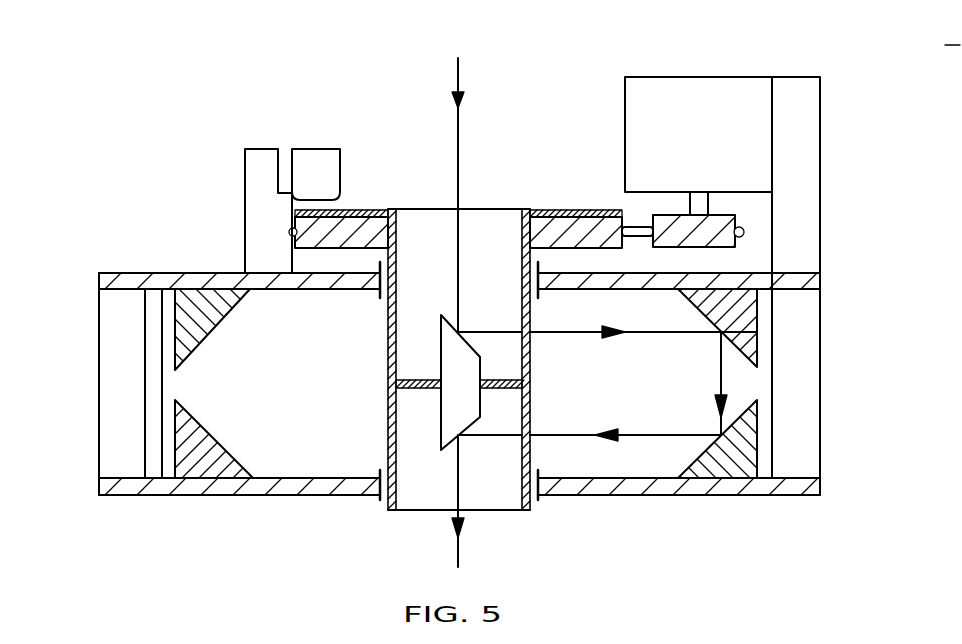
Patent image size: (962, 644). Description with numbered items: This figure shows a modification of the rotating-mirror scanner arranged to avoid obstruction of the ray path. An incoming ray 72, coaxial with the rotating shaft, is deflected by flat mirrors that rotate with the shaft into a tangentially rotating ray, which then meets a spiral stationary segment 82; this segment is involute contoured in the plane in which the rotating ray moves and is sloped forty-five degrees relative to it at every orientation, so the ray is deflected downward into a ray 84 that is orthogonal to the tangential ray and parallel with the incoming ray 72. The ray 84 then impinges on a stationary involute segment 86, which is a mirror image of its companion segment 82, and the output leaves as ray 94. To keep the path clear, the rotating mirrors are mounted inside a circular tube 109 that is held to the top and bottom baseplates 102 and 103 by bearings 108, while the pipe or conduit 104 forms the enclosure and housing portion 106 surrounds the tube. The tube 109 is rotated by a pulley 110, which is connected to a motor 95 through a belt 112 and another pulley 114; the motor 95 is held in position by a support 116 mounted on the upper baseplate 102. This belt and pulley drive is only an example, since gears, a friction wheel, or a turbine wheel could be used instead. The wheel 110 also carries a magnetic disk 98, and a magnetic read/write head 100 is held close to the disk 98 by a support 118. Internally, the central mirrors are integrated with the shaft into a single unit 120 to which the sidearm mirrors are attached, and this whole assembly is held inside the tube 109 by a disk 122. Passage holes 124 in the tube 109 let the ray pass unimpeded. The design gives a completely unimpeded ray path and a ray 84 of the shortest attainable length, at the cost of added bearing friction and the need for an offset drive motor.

The incoming ray 72 is at (460, 70).
The spiral stationary segment 82 is at (218, 325).
The ray 84 is at (720, 392).
The stationary involute segment 86 is at (218, 438).
The output light beam 94 is at (462, 552).
The motor 95 is at (716, 154).
The magnetic disk 98 is at (553, 210).
The magnetic read/write head 100 is at (308, 153).
The upper baseplate 102 is at (190, 273).
The bottom baseplate 103 is at (648, 488).
The conduit 104 is at (455, 382).
The housing 106 is at (423, 359).
The bearings 108 is at (374, 300).
The circular tube 109 is at (398, 258).
The pulley 110 is at (373, 210).
The belt 112 is at (744, 228).
The pulley 114 is at (700, 248).
The support 116 is at (812, 132).
The support 118 is at (270, 153).
The single unit 120 is at (455, 437).
The disk 122 is at (398, 374).
The passage holes 124 is at (528, 342).